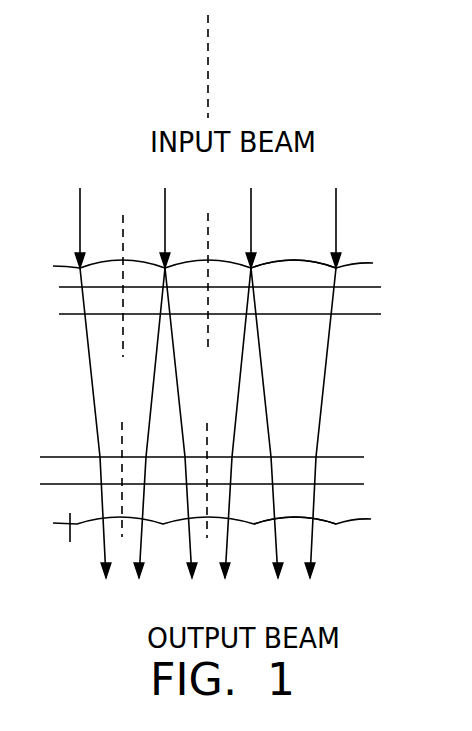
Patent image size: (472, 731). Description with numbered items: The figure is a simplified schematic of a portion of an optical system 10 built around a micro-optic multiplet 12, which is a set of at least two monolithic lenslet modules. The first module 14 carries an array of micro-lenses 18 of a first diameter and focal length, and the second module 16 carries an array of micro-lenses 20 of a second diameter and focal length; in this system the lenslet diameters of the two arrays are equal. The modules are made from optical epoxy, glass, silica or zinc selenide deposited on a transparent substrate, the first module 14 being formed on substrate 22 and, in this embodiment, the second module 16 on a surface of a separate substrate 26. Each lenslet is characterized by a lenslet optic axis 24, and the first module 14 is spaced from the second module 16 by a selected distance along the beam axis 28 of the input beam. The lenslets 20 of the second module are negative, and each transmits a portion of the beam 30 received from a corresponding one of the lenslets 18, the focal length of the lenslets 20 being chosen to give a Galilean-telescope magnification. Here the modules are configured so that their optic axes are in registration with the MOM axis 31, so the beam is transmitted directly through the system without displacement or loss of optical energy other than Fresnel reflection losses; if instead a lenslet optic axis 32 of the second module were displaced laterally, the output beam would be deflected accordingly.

The optical system 10 is at (60, 215).
The micro-optic multiplet 12 is at (364, 170).
The module 14 is at (374, 277).
The module 16 is at (202, 511).
The micro-lenses 18 is at (271, 263).
The micro-lenses 20 is at (259, 525).
The substrate 22 is at (366, 305).
The lenslet optic axis 24 is at (123, 233).
The substrate 26 is at (284, 475).
The beam axis 28 is at (210, 68).
The beam 30 is at (238, 368).
The MOM axis 31 is at (338, 222).
The lenslet optic axis 32 is at (207, 441).